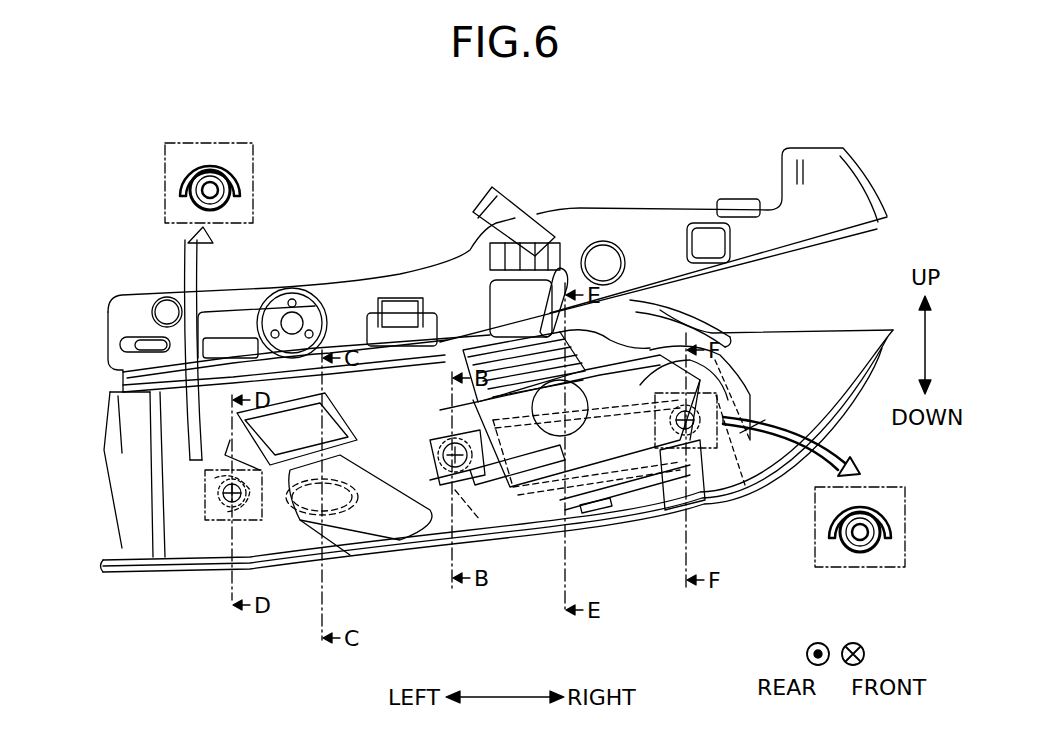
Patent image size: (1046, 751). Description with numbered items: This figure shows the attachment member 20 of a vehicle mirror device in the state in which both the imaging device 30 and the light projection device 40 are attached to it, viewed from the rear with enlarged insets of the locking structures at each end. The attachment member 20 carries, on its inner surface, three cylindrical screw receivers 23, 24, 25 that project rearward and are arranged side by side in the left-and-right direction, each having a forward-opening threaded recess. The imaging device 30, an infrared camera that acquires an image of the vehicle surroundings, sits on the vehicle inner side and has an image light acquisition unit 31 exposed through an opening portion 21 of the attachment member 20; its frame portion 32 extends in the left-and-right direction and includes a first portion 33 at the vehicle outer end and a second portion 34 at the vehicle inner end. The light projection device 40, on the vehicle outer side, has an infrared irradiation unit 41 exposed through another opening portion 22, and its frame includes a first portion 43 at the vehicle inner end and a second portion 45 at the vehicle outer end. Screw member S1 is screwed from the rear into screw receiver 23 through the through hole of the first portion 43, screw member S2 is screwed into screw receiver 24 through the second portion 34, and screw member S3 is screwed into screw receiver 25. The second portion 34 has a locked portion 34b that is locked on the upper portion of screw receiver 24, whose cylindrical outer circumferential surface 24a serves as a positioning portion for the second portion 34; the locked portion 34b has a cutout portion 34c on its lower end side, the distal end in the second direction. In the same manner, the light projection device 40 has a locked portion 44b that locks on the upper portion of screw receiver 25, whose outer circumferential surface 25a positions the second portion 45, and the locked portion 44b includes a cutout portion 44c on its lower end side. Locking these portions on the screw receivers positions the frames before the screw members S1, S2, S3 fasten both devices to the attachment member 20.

The attachment member 20 is at (863, 133).
The opening portion 21 is at (356, 512).
The opening portion 22 is at (590, 512).
The screw receiver 23 is at (482, 500).
The screw receiver 24 is at (230, 515).
The outer circumferential surface 24a is at (236, 197).
The screw receiver 25 is at (735, 455).
The outer circumferential surface 25a is at (890, 546).
The imaging device 30 is at (290, 402).
The image light acquisition unit 31 is at (318, 510).
The frame portion 32 is at (410, 490).
The first portion 33 is at (440, 430).
The second portion 34 is at (150, 498).
The locked portion 34b is at (200, 486).
The cutout portion 34c is at (183, 193).
The light projection device 40 is at (610, 345).
The infrared irradiation unit 41 is at (630, 500).
The first portion 43 is at (490, 505).
The locked portion 44b is at (878, 511).
The cutout portion 44c is at (888, 539).
The second portion 45 is at (705, 445).
The screw member S1 is at (440, 470).
The screw member S2 is at (228, 496).
The screw member S3 is at (705, 396).